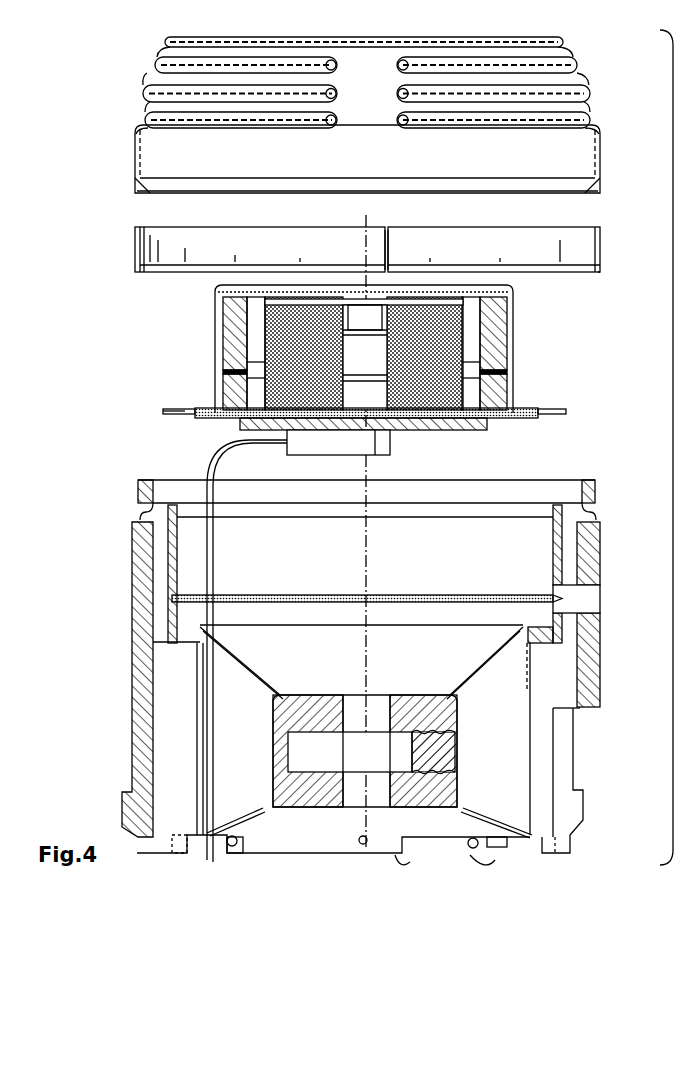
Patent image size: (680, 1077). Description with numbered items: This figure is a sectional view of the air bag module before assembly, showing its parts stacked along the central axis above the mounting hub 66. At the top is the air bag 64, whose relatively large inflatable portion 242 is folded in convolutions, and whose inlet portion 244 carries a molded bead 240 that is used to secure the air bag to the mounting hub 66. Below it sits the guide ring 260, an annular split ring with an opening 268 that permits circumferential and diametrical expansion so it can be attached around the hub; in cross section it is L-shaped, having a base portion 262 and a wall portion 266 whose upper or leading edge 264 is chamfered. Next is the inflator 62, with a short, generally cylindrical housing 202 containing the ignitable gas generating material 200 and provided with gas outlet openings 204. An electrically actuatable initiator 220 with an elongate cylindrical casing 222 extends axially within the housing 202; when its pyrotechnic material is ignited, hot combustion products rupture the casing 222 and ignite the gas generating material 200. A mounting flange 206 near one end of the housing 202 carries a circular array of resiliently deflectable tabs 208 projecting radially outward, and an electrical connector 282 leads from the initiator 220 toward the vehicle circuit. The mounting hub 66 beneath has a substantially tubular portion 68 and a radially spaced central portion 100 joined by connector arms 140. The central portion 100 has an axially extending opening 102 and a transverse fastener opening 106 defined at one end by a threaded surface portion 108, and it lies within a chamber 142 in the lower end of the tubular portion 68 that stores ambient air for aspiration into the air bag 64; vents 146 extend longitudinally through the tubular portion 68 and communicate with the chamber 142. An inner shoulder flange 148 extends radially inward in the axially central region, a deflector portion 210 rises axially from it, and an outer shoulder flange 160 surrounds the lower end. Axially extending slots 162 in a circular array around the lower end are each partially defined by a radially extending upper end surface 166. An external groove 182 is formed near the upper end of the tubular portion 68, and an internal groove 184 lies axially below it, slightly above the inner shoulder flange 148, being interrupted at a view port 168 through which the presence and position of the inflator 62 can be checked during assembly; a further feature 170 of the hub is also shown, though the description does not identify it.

The air bag 64 is at (346, 122).
The inflatable portion 242 is at (190, 38).
The molded bead 240 is at (592, 185).
The inlet portion 244 is at (168, 193).
The guide ring 260 is at (358, 257).
The base portion 262 is at (142, 272).
The chamfered leading edge 264 is at (598, 235).
The wall portion 266 is at (600, 242).
The opening 268 is at (388, 248).
The inflator 62 is at (359, 356).
The housing 202 is at (513, 288).
The gas outlet openings 204 is at (215, 312).
The ignitable gas generating material 200 is at (440, 412).
The initiator 220 is at (362, 296).
The tabs 208 is at (555, 410).
The mounting flange 206 is at (163, 410).
The electrical connector 282 is at (345, 440).
The casing 222 is at (372, 407).
The mounting hub 66 is at (351, 652).
The external groove 182 is at (598, 487).
The tubular portion 68 is at (140, 595).
The connector arms 140 is at (240, 727).
The recess 170 is at (567, 728).
The vents 146 is at (155, 555).
The view port 168 is at (600, 598).
The internal groove 184 is at (272, 597).
The chamber 142 is at (453, 662).
The inner shoulder flange 148 is at (197, 650).
The deflector portion 210 is at (178, 545).
The central portion 100 is at (295, 780).
The fastener opening 106 is at (320, 780).
The threaded surface portion 108 is at (440, 742).
The axially extending opening 102 is at (345, 705).
The outer shoulder flange 160 is at (128, 795).
The upper end surface 166 is at (232, 835).
The slots 162 is at (480, 857).